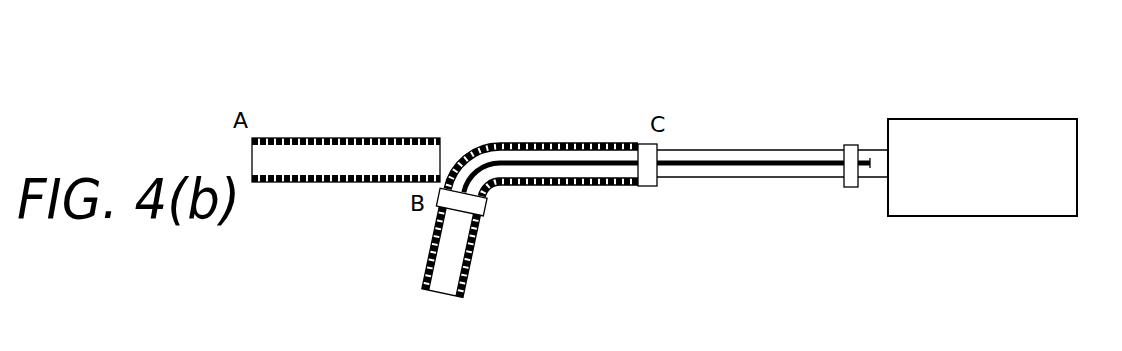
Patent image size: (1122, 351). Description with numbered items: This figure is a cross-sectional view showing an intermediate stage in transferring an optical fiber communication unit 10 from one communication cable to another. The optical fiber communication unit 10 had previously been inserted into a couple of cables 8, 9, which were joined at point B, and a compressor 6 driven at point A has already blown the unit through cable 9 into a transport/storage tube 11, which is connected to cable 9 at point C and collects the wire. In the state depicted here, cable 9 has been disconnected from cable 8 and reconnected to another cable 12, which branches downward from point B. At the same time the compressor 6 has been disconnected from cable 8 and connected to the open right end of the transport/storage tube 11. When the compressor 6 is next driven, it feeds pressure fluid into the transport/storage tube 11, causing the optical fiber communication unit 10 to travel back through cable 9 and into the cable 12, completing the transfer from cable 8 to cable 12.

The compressor 6 is at (1040, 119).
The cable 8 is at (397, 138).
The cable 9 is at (612, 142).
The optical fiber communication unit 10 is at (542, 158).
The transport/storage tube 11 is at (722, 150).
The cable 12 is at (474, 243).